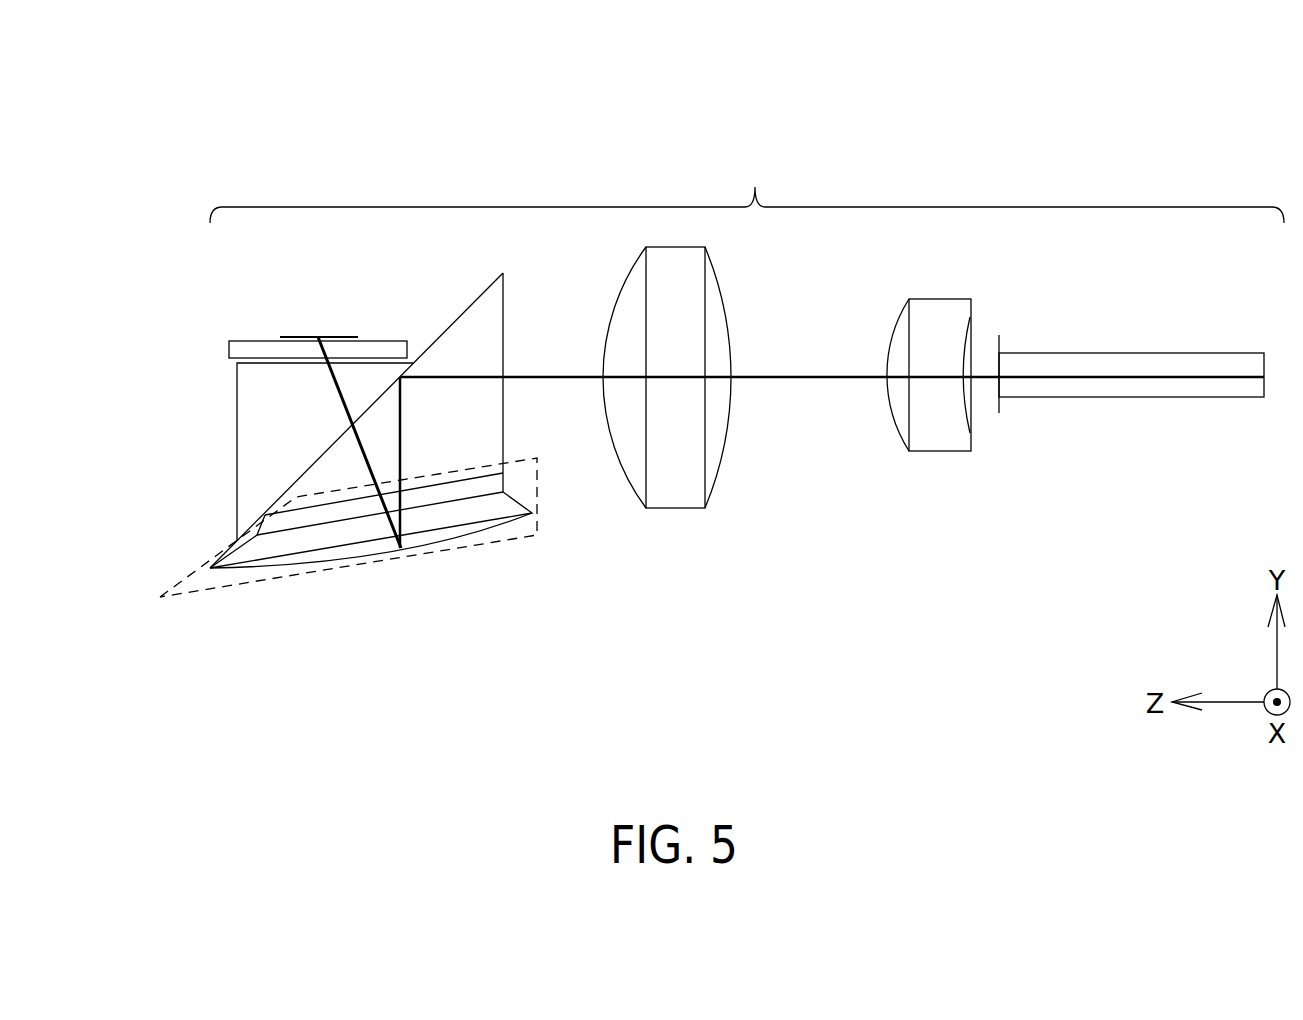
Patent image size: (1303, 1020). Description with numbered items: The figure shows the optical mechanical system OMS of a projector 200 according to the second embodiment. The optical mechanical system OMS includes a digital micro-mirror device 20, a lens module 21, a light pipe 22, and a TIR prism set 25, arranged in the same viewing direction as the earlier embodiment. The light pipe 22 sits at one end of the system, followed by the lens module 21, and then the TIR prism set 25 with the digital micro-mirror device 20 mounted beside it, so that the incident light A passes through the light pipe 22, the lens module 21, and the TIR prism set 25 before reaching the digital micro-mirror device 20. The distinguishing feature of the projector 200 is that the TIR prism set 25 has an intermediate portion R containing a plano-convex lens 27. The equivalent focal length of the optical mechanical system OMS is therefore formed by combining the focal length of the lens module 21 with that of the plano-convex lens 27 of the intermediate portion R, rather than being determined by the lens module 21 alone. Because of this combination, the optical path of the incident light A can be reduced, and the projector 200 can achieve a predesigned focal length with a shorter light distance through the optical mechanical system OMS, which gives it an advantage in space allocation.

The projector 200 is at (176, 133).
The optical mechanical system OMS is at (747, 184).
The digital micro-mirror device 20 is at (350, 336).
The TIR prism set 25 is at (237, 454).
The plano-convex lens 27 is at (373, 552).
The intermediate portion R is at (513, 540).
The incident light A is at (833, 375).
The lens module 21 is at (615, 555).
The light pipe 22 is at (1133, 352).